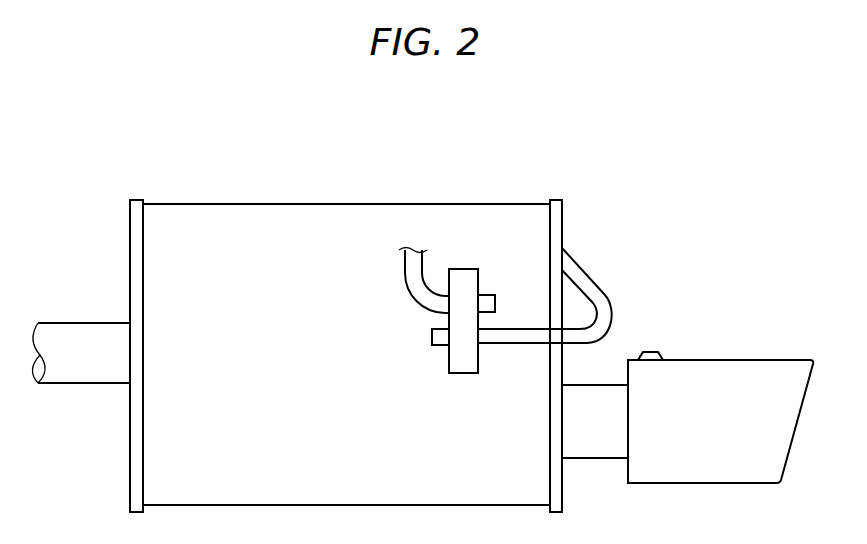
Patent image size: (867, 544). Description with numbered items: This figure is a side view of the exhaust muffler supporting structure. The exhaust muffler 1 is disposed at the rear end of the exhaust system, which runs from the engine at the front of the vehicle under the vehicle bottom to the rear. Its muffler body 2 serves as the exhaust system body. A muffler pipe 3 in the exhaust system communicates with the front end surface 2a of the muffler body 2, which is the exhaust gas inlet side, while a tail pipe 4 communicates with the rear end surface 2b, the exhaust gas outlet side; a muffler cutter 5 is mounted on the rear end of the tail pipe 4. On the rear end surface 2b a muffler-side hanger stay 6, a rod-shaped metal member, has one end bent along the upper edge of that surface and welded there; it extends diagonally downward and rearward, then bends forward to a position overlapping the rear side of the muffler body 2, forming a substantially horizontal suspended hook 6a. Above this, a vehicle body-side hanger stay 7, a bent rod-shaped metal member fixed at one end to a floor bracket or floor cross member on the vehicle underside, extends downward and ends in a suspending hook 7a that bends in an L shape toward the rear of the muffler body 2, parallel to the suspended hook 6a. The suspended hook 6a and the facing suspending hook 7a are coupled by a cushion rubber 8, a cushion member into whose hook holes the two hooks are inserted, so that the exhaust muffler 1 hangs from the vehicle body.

The exhaust muffler 1 is at (638, 170).
The muffler body 2 is at (265, 210).
The front end surface 2a is at (130, 256).
The rear end surface 2b is at (562, 493).
The muffler pipe 3 is at (89, 377).
The tail pipe 4 is at (595, 394).
The muffler cutter 5 is at (737, 367).
The muffler-side hanger stay 6 is at (600, 285).
The suspended hook 6a is at (437, 346).
The vehicle body-side hanger stay 7 is at (405, 279).
The suspending hook 7a is at (487, 295).
The cushion rubber 8 is at (466, 373).